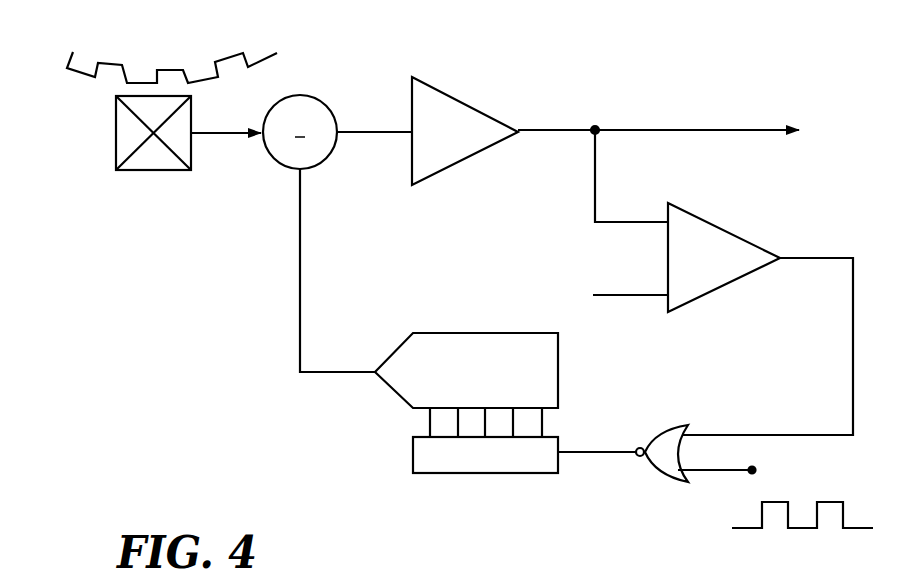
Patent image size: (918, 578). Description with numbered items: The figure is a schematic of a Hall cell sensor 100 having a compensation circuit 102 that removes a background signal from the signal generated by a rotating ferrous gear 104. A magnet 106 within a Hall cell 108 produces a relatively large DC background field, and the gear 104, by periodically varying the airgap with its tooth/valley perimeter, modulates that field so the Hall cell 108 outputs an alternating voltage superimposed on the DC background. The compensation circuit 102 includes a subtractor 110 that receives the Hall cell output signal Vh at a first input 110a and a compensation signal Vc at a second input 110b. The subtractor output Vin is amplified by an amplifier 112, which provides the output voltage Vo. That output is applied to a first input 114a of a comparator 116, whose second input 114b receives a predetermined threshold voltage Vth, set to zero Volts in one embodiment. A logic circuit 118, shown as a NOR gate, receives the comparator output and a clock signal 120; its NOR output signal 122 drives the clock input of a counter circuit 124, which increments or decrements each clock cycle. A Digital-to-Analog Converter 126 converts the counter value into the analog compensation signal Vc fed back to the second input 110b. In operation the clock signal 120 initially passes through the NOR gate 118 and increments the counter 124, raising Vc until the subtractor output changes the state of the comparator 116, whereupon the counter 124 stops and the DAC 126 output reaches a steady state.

The Hall cell sensor 100 is at (616, 71).
The compensation circuit 102 is at (526, 262).
The rotating ferrous gear 104 is at (182, 51).
The magnet 106 is at (153, 152).
The Hall cell 108 is at (106, 122).
The subtractor 110 is at (308, 95).
The first input 110a is at (227, 138).
The second input 110b is at (301, 236).
The amplifier 112 is at (467, 103).
The first input 114a is at (630, 221).
The second input 114b is at (630, 297).
The comparator 116 is at (725, 224).
The logic circuit 118 is at (664, 423).
The clock signal 120 is at (725, 473).
The NOR output signal 122 is at (577, 450).
The counter circuit 124 is at (448, 474).
The Digital-to-Analog Converter 126 is at (448, 332).